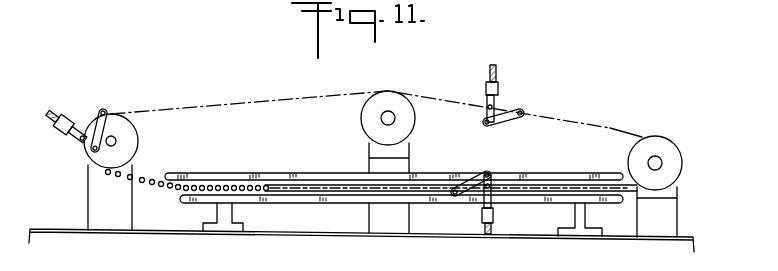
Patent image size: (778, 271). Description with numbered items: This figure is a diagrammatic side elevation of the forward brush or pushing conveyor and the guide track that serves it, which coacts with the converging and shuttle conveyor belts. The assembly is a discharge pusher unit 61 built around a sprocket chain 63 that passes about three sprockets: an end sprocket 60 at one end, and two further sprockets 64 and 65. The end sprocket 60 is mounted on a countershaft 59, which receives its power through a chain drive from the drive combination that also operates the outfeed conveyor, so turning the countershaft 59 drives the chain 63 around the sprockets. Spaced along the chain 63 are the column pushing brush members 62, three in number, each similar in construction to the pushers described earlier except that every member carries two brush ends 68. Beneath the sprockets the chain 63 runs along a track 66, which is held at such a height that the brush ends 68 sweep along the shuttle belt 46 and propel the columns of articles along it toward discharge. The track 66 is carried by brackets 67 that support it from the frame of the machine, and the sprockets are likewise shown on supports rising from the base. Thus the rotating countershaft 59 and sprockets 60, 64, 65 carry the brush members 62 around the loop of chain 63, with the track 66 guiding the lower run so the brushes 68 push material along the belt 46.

The shuttle belt 46 is at (282, 234).
The countershaft 59 is at (663, 157).
The end sprocket 60 is at (683, 157).
The discharge pusher unit 61 is at (627, 119).
The brush member 62 is at (72, 117).
The sprocket chain 63 is at (584, 100).
The sprocket 64 is at (362, 117).
The sprocket 65 is at (137, 133).
The track 66 is at (281, 171).
The bracket 67 is at (84, 197).
The brush end 68 is at (50, 112).